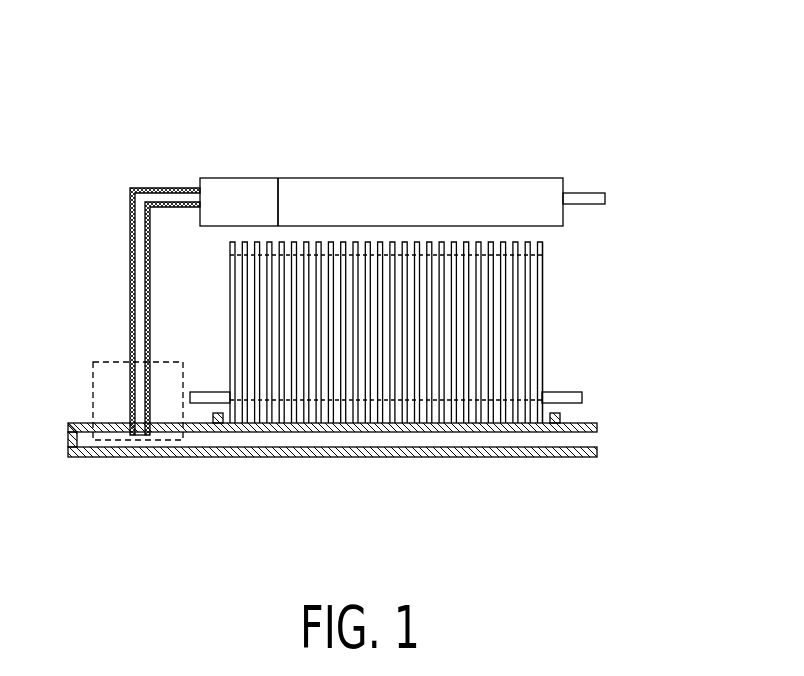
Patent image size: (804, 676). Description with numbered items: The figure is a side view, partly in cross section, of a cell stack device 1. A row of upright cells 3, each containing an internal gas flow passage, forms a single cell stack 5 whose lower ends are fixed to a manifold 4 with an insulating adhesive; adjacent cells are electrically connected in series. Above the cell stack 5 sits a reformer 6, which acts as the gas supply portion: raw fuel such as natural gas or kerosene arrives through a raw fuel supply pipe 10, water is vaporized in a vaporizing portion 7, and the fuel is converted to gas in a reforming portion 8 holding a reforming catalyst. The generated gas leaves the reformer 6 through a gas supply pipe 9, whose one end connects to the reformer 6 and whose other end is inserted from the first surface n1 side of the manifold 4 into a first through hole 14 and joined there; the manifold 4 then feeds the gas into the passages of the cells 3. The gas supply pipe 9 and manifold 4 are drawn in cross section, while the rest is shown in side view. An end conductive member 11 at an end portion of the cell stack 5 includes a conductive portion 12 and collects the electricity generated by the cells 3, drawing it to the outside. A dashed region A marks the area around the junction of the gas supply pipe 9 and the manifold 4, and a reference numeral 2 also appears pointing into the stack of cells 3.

The cell stack device 1 is at (180, 127).
The heat sink 2 is at (337, 257).
The cell 3 is at (445, 240).
The manifold 4 is at (570, 442).
The cell stack 5 is at (203, 468).
The reformer 6 is at (257, 72).
The vaporizing portion 7 is at (253, 200).
The reforming portion 8 is at (313, 200).
The gas supply pipe 9 is at (140, 222).
The raw fuel supply pipe 10 is at (587, 200).
The end conductive member 11 is at (542, 317).
The conductive portion 12 is at (560, 396).
The first through hole 14 is at (145, 440).
The first surface n1 is at (78, 423).
The region A is at (138, 384).